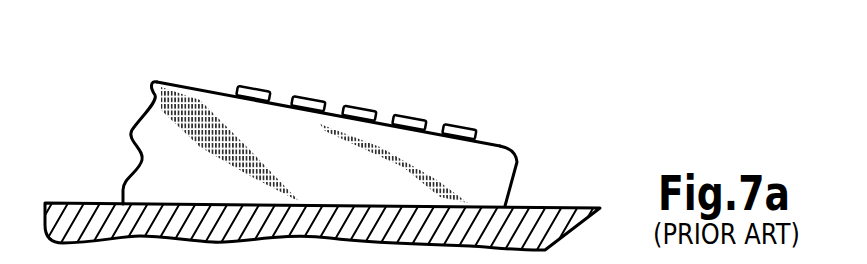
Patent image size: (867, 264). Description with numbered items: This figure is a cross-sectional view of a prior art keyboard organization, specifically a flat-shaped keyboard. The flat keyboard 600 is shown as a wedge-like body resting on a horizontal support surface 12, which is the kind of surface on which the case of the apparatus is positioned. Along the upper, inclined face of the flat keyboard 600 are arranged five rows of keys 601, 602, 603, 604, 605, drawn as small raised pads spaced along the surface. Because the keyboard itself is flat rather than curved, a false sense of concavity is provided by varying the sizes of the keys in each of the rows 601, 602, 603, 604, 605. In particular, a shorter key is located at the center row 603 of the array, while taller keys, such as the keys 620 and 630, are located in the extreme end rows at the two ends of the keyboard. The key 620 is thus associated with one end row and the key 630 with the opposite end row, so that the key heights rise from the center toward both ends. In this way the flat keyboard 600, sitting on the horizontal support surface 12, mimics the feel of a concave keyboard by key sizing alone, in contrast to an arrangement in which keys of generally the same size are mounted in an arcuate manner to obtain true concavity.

The horizontal support surface 12 is at (517, 206).
The flat keyboard 600 is at (333, 167).
The key 620 is at (476, 138).
The key 630 is at (236, 92).
The row of keys 601 is at (476, 123).
The row of keys 602 is at (421, 114).
The center row 603 is at (367, 103).
The row of keys 604 is at (313, 94).
The row of keys 605 is at (262, 80).